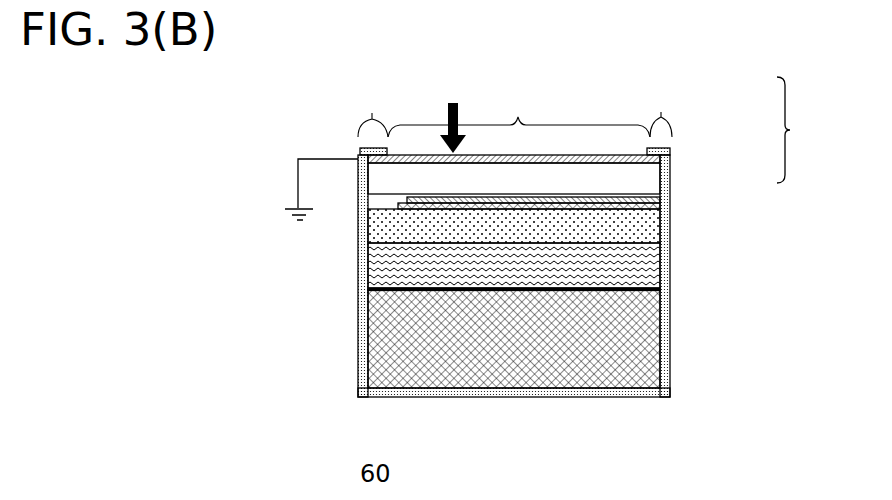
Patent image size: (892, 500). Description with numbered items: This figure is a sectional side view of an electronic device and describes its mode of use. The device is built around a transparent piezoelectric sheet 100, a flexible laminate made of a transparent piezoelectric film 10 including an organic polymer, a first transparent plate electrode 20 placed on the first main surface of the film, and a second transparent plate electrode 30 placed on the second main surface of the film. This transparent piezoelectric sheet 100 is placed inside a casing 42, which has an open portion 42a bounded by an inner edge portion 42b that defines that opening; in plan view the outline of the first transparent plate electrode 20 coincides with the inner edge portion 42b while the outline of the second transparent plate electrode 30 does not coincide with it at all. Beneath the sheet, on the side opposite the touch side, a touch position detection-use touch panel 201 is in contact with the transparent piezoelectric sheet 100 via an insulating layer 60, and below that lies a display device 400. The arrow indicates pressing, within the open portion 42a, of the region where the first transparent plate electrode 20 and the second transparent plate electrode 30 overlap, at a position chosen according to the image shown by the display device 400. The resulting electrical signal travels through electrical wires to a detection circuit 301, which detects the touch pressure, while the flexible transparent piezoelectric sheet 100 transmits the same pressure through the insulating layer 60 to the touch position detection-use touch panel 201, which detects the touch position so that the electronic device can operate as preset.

The casing 42 is at (358, 152).
The open portion 42a is at (519, 116).
The inner edge portion 42b is at (518, 108).
The first transparent plate electrode 20 is at (623, 150).
The transparent piezoelectric film 10 is at (635, 177).
The second transparent plate electrode 30 is at (633, 198).
The transparent piezoelectric sheet 100 is at (808, 130).
The insulating layer 60 is at (652, 222).
The touch position detection-use touch panel 201 is at (652, 272).
The display device 400 is at (665, 290).
The detection circuit 301 is at (652, 343).